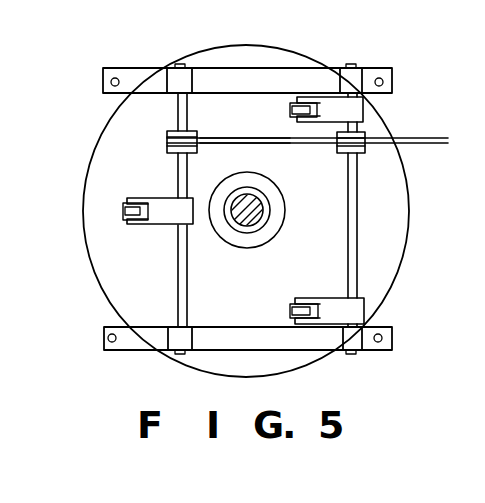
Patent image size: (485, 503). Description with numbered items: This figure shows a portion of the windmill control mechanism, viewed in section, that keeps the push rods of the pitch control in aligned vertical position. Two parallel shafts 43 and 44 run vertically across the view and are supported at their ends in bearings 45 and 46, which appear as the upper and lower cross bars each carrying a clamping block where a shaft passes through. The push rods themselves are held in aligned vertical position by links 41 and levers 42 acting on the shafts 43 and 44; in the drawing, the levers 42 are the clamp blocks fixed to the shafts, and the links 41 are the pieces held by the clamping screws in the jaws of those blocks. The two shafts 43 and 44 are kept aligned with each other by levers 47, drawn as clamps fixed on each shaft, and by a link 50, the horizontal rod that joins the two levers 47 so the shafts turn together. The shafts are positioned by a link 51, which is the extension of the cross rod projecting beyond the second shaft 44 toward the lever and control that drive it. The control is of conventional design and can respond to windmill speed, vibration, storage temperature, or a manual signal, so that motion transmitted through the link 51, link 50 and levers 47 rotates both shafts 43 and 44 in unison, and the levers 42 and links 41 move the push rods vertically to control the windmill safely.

The links 41 is at (124, 209).
The levers 42 is at (128, 222).
The parallel shaft 43 is at (172, 112).
The parallel shaft 44 is at (347, 203).
The bearing 45 is at (393, 80).
The bearing 46 is at (393, 341).
The levers 47 is at (167, 134).
The link 50 is at (276, 146).
The link 51 is at (446, 137).